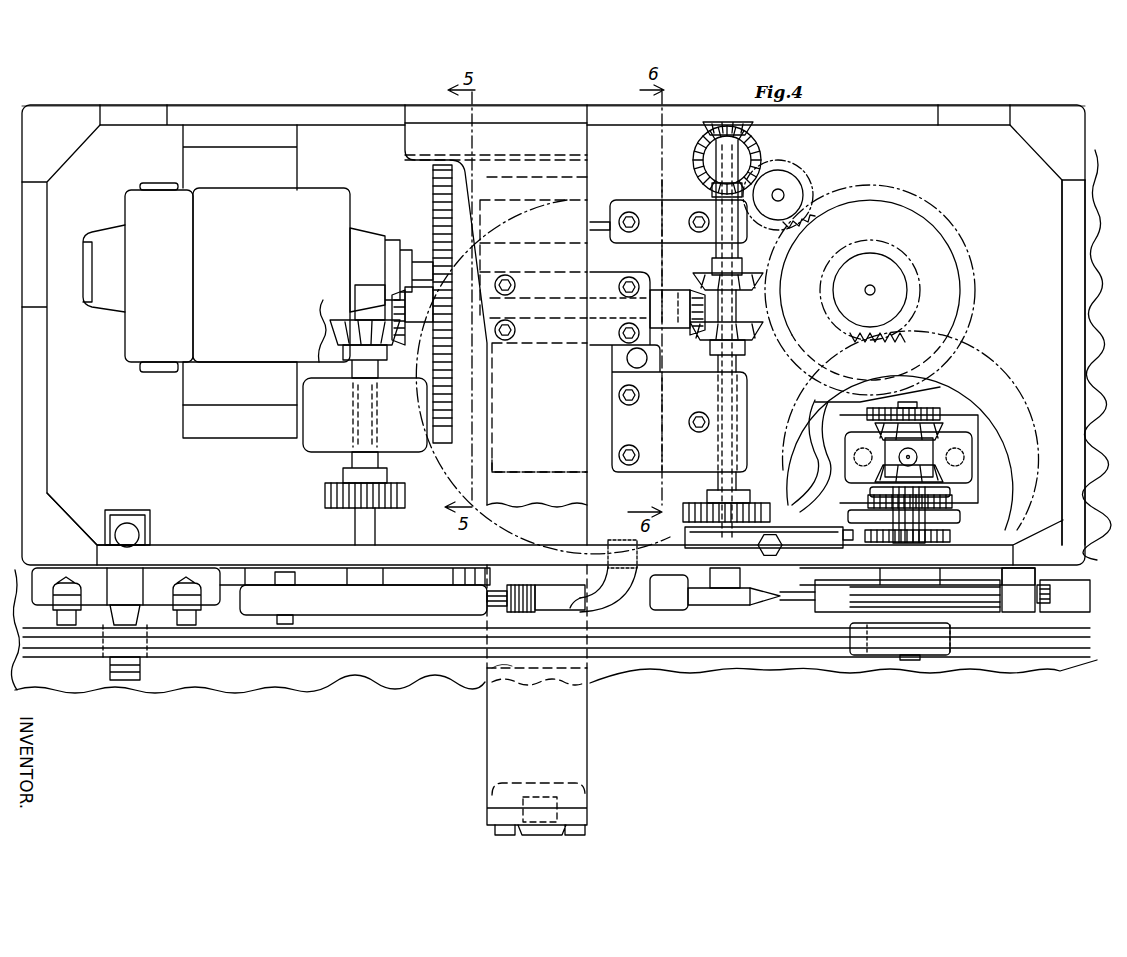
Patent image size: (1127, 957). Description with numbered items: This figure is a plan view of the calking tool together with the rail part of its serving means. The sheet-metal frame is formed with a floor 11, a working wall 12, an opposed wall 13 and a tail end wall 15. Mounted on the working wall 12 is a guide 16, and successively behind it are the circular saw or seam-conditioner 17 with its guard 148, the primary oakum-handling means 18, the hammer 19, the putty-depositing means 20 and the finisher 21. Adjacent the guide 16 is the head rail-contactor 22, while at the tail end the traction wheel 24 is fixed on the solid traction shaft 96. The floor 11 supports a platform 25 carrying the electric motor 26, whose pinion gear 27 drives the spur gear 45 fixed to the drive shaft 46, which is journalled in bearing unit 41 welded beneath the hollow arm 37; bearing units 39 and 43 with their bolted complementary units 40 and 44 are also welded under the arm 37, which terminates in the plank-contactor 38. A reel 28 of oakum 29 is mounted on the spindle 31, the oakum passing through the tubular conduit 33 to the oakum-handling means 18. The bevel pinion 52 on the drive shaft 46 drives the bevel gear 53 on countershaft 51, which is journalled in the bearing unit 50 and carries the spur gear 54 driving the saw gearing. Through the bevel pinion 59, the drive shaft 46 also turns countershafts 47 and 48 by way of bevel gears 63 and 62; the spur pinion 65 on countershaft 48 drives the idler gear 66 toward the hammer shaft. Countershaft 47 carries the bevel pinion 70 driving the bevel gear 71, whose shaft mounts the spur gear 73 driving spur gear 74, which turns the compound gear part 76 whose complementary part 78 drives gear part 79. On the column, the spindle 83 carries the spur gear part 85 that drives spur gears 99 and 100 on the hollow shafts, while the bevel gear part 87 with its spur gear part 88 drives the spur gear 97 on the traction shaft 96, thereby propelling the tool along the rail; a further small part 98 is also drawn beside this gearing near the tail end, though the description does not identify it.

The floor 11 is at (561, 397).
The working wall 12 is at (87, 523).
The opposed wall 13 is at (146, 110).
The tail end wall 15 is at (1072, 258).
The guide 16 is at (167, 550).
The circular saw 17 is at (317, 604).
The primary oakum-handling means 18 is at (536, 598).
The secondary oakum-handling means 19 is at (714, 600).
The putty-depositing means 20 is at (824, 616).
The finisher 21 is at (1063, 596).
The head rail-contactor 22 is at (105, 675).
The tail rail-contactor 24 is at (881, 658).
The platform 25 is at (190, 167).
The electric motor 26 is at (266, 313).
The pinion gear 27 is at (426, 248).
The reel 28 is at (543, 525).
The oakum 29 is at (522, 612).
The spindle 31 is at (540, 372).
The tubular conduit 33 is at (568, 527).
The hollow arm 37 is at (524, 123).
The plank-contactor 38 is at (588, 820).
The bearing unit 39 is at (593, 204).
The complementary bearing unit 40 is at (608, 229).
The bearing unit 41 is at (521, 275).
The bearing unit 43 is at (595, 449).
The complementary bearing unit 44 is at (668, 372).
The spur gear 45 is at (432, 200).
The drive shaft 46 is at (404, 342).
The countershaft 47 is at (712, 172).
The countershaft 48 is at (720, 483).
The complementary bearing unit 50 is at (365, 414).
The countershaft 51 is at (354, 530).
The bevel pinion 52 is at (389, 308).
The bevel gear 53 is at (337, 314).
The spur gear 54 is at (325, 503).
The bevel pinion 59 is at (695, 332).
The bevel gear 62 is at (726, 315).
The bevel gear 63 is at (756, 282).
The spur pinion 65 is at (771, 267).
The idler gear 66 is at (772, 514).
The bevel pinion 70 is at (728, 122).
The bevel gear 71 is at (758, 152).
The spur gear 73 is at (800, 160).
The spur gear 74 is at (792, 182).
The compound gear part 76 is at (916, 216).
The gear part 78 is at (896, 272).
The gear part 79 is at (986, 366).
The spindle 83 is at (950, 484).
The spur gear part 85 is at (896, 540).
The bevel gear part 87 is at (960, 446).
The spur gear part 88 is at (906, 404).
The solid traction shaft 96 is at (911, 660).
The spur gear 97 is at (814, 388).
The screw 98 is at (854, 524).
The spur gear 99 is at (950, 535).
The spur gear 100 is at (960, 515).
The guard 148 is at (363, 598).